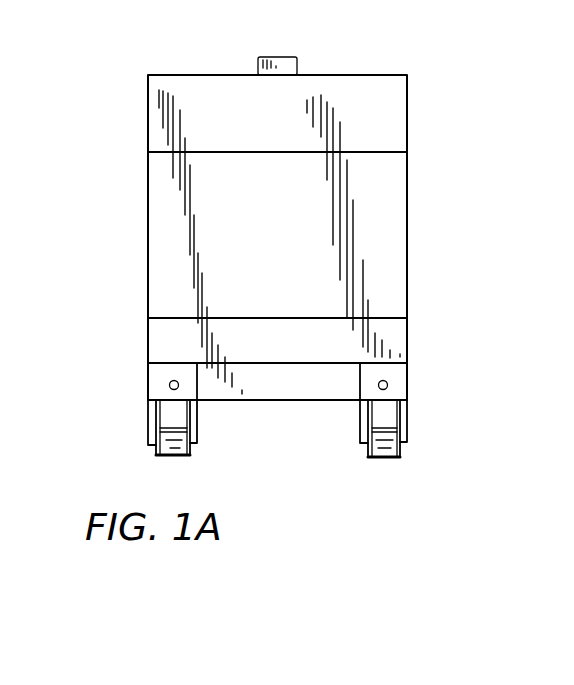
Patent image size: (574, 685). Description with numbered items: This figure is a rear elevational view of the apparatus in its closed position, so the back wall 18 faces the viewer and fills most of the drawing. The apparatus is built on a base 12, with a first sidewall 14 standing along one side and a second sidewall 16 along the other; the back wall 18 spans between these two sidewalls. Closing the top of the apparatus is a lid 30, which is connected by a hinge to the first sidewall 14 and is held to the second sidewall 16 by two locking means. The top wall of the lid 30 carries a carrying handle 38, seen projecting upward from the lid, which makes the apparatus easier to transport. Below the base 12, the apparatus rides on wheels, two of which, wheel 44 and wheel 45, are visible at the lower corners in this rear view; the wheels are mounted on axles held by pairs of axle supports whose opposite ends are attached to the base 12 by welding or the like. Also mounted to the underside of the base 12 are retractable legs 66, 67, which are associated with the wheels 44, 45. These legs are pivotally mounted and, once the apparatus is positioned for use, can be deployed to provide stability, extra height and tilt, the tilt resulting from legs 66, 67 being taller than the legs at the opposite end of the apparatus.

The lid 30 is at (357, 73).
The carrying handle 38 is at (283, 56).
The second sidewall 16 is at (148, 242).
The first sidewall 14 is at (407, 240).
The back wall 18 is at (305, 257).
The base 12 is at (268, 400).
The retractable leg 66 is at (160, 385).
The retractable leg 67 is at (395, 388).
The wheel 44 is at (160, 458).
The wheel 45 is at (400, 455).